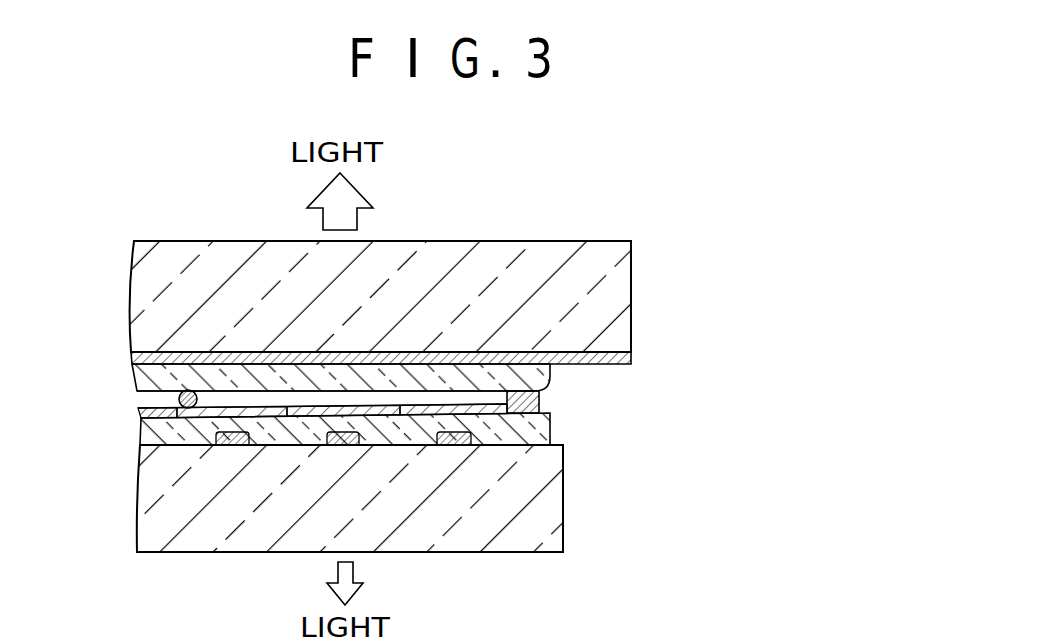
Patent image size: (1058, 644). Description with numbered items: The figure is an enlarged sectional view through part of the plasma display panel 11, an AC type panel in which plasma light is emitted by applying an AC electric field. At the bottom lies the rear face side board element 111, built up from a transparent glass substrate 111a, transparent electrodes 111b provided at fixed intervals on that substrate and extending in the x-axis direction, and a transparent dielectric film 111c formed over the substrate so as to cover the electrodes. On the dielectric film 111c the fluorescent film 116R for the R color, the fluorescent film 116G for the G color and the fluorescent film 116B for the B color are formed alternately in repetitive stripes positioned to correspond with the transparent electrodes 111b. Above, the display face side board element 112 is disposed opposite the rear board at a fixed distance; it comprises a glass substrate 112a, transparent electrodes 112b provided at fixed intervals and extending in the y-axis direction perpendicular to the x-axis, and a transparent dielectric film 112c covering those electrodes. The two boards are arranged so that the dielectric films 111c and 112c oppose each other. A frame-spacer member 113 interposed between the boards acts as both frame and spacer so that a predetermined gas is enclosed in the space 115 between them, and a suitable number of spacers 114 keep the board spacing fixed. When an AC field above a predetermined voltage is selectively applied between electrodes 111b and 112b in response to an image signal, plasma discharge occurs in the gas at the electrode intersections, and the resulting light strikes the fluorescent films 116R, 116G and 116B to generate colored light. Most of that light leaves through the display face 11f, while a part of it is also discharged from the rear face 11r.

The plasma display panel 11 is at (552, 240).
The display face 11f is at (200, 240).
The rear face 11r is at (513, 552).
The rear face side board element 111 is at (672, 433).
The transparent glass substrate 111a is at (543, 530).
The transparent electrodes 111b is at (465, 441).
The transparent dielectric film 111c is at (547, 428).
The display face side board element 112 is at (742, 272).
The glass substrate 112a is at (615, 290).
The transparent electrodes 112b is at (623, 356).
The transparent dielectric film 112c is at (538, 378).
The frame-spacer member 113 is at (542, 403).
The spacer 114 is at (179, 397).
The space 115 is at (245, 393).
The fluorescent film for the R color 116R is at (178, 408).
The fluorescent film for the G color 116G is at (287, 407).
The fluorescent film for the B color 116B is at (400, 405).